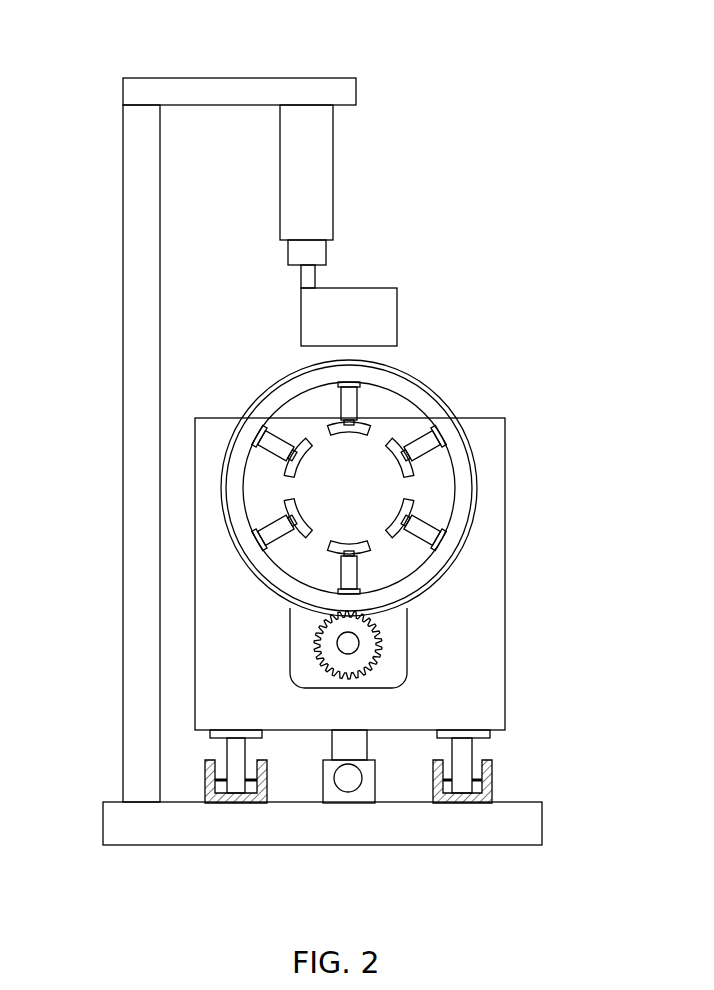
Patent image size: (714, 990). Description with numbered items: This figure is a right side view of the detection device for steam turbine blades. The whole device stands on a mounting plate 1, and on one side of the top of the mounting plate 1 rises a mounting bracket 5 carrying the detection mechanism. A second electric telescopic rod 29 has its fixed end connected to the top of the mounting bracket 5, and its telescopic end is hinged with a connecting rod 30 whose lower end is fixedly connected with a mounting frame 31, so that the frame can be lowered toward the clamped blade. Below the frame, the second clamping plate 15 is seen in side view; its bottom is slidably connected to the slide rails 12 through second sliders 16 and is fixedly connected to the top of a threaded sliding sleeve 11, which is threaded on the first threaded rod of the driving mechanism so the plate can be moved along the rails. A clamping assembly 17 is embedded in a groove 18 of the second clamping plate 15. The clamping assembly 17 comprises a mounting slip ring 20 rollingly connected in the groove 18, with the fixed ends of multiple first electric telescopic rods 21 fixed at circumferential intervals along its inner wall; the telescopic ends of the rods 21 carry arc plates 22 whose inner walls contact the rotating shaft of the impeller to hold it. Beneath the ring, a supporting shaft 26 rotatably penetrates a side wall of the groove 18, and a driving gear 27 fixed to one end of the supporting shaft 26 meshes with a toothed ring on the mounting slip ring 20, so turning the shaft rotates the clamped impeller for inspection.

The mounting plate 1 is at (282, 830).
The mounting bracket 5 is at (158, 216).
The threaded sliding sleeve 11 is at (335, 800).
The slide rail 12 is at (228, 802).
The second clamping plate 15 is at (430, 705).
The second slider 16 is at (237, 773).
The clamping assembly 17 is at (350, 486).
The groove 18 is at (335, 678).
The mounting slip ring 20 is at (438, 560).
The first electric telescopic rod 21 is at (420, 530).
The arc plate 22 is at (392, 530).
The supporting shaft 26 is at (360, 650).
The driving gear 27 is at (360, 630).
The second electric telescopic rod 29 is at (310, 155).
The connecting rod 30 is at (307, 270).
The mounting frame 31 is at (360, 316).